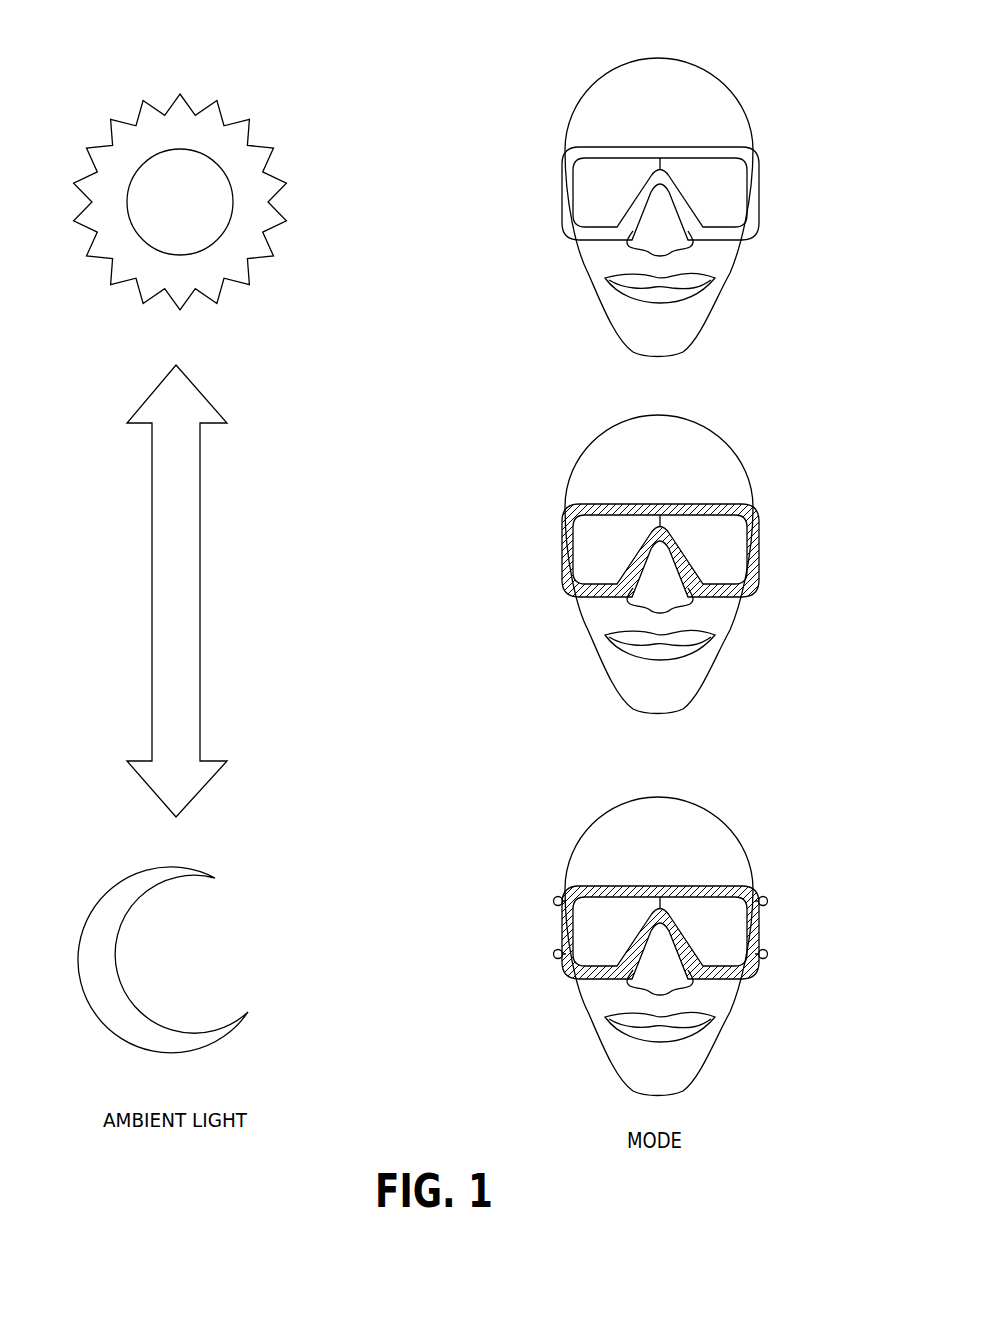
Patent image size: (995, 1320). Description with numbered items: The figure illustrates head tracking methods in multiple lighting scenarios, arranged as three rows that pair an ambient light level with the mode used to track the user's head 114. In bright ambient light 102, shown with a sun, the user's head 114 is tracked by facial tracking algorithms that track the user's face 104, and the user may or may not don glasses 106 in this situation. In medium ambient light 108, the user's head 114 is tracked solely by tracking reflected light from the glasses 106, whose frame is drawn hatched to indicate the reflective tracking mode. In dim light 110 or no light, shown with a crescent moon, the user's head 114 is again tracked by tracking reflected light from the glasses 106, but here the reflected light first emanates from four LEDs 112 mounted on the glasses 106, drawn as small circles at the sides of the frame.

The bright ambient light 102 is at (332, 337).
The user's face 104 is at (725, 283).
The glasses 106 is at (760, 188).
The medium ambient light 108 is at (342, 578).
The dim light 110 is at (297, 843).
The LEDs 112 is at (768, 953).
The user's head 114 is at (722, 76).